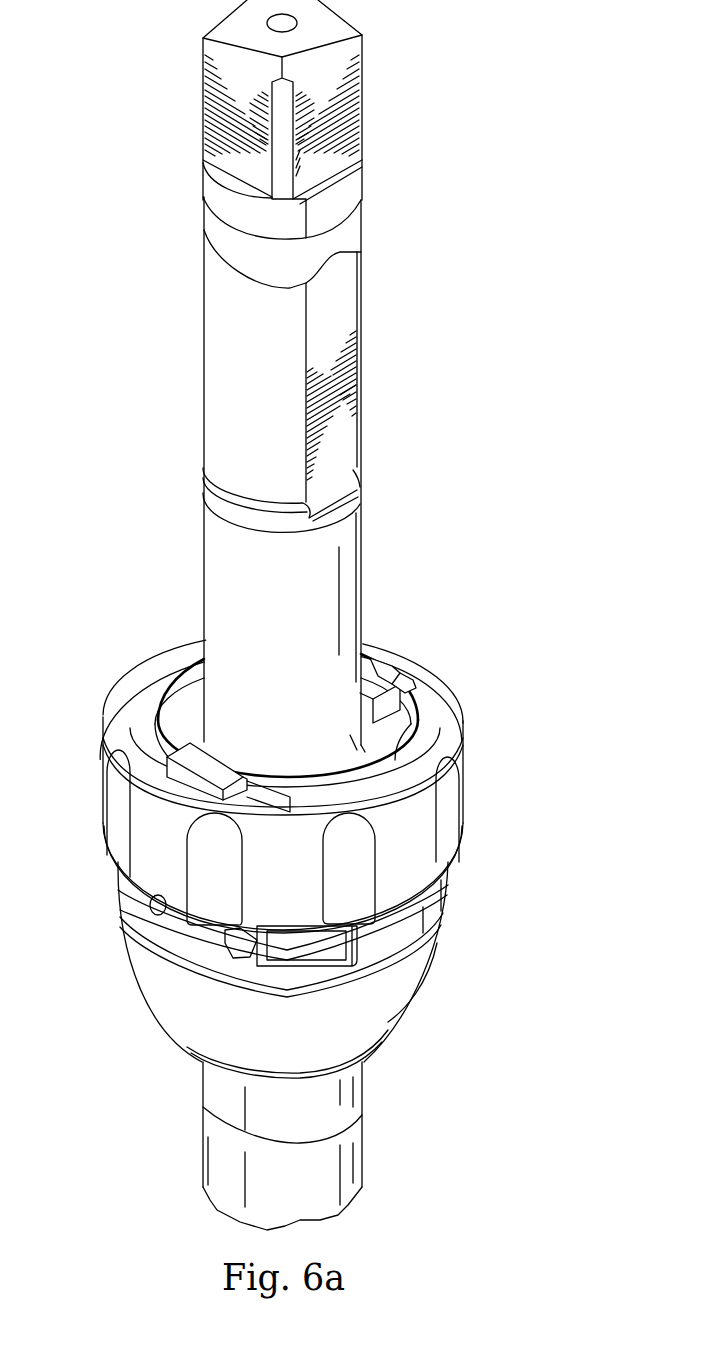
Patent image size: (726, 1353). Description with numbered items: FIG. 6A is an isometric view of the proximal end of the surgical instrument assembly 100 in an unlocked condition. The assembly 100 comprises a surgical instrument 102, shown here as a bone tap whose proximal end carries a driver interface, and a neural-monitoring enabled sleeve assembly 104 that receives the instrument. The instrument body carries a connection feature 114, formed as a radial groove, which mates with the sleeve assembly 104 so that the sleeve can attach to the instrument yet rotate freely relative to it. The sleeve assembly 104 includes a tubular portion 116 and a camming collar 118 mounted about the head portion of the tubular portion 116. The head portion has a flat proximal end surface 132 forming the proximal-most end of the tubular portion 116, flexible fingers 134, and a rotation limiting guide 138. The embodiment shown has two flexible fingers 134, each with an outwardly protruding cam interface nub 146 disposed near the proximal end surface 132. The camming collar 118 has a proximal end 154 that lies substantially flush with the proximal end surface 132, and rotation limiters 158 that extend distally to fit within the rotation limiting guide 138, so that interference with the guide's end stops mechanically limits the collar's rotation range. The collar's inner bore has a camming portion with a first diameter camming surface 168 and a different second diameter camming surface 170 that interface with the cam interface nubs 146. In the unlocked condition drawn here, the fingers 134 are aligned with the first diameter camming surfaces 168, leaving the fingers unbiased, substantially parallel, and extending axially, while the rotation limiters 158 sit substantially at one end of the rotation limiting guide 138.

The surgical instrument assembly 100 is at (288, 615).
The surgical instrument 102 is at (197, 372).
The sleeve assembly 104 is at (269, 1046).
The connection feature 114 is at (355, 750).
The tubular portion 116 is at (195, 1156).
The camming collar 118 is at (288, 767).
The proximal end surface 132 is at (188, 686).
The flexible fingers 134 is at (388, 662).
The rotation limiting guide 138 is at (152, 931).
The cam interface nub 146 is at (383, 740).
The proximal end 154 is at (105, 770).
The rotation limiters 158 is at (306, 978).
The first diameter camming surface 168 is at (408, 679).
The second diameter camming surface 170 is at (158, 700).